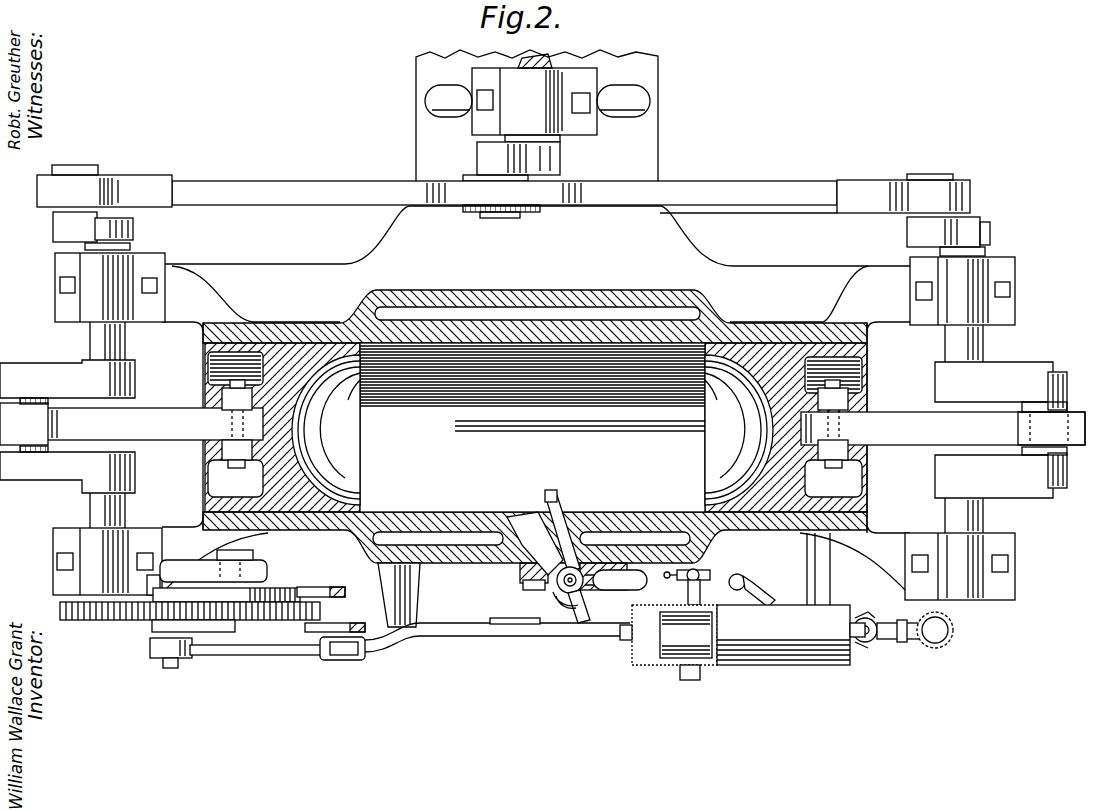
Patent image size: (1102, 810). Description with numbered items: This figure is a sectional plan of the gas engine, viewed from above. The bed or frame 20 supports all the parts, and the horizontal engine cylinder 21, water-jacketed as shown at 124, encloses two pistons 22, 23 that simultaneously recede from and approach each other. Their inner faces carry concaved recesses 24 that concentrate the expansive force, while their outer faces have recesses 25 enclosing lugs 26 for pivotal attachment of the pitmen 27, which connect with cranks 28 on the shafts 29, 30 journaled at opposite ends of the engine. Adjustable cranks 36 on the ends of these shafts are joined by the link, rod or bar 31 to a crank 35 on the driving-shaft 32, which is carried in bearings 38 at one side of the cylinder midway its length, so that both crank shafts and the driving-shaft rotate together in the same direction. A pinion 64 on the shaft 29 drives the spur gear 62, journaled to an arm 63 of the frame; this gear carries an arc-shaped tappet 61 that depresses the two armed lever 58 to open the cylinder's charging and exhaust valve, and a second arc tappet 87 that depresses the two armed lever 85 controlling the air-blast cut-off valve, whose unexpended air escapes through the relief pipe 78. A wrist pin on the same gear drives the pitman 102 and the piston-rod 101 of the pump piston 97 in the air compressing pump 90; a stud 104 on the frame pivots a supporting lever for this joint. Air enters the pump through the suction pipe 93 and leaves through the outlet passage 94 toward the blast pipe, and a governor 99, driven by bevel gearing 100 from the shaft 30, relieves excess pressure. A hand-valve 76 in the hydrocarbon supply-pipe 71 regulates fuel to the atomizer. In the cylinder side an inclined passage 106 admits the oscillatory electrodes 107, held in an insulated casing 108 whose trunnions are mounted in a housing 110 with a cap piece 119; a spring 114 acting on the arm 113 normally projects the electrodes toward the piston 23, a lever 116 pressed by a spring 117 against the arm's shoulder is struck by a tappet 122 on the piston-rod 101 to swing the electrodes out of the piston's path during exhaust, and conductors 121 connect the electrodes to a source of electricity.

The bed or frame 20 is at (534, 403).
The engine cylinder 21 is at (775, 323).
The piston 22 is at (282, 427).
The piston 23 is at (786, 427).
The concaved recess 24 is at (532, 430).
The recess 25 is at (535, 424).
The lug 26 is at (225, 400).
The pitman 27 is at (542, 424).
The crank 28 is at (533, 386).
The shaft 29 is at (105, 512).
The shaft 30 is at (960, 520).
The rod, link or bar 31 is at (503, 191).
The driving-shaft 32 is at (550, 58).
The crank 35 is at (490, 160).
The crank 36 is at (521, 234).
The bearing 38 is at (537, 101).
The two armed lever 58 is at (325, 588).
The arc-shaped cam projection or tappet 61 is at (275, 588).
The spur gear 62 is at (210, 630).
The arm 63 is at (207, 572).
The pinion 64 is at (190, 622).
The hydrocarbon supply-pipe 71 is at (700, 675).
The hand-valve 76 is at (688, 583).
The relief pipe 78 is at (740, 576).
The two armed lever 85 is at (335, 624).
The arc-shaped cam projection or tappet 87 is at (195, 632).
The air compressing pump 90 is at (640, 665).
The inlet or suction pipe 93 is at (807, 569).
The outlet passage 94 is at (783, 635).
The pump piston 97 is at (683, 632).
The governor 99 is at (868, 618).
The bevel gearing 100 is at (928, 645).
The piston-rod 101 is at (447, 637).
The pitman 102 is at (283, 652).
The stud 104 is at (416, 612).
The inclined opening or passage 106 is at (535, 515).
The oscillatory electrodes 107 is at (568, 490).
The casing or holder 108 is at (585, 535).
The housing or bracket 110 is at (545, 596).
The arm 113 is at (588, 594).
The spring 114 is at (640, 570).
The lever 116 is at (585, 618).
The spring 117 is at (598, 570).
The cap piece 119 is at (530, 586).
The wires or conductors 121 is at (555, 604).
The tappet 122 is at (500, 625).
The water-jacket 124 is at (545, 312).